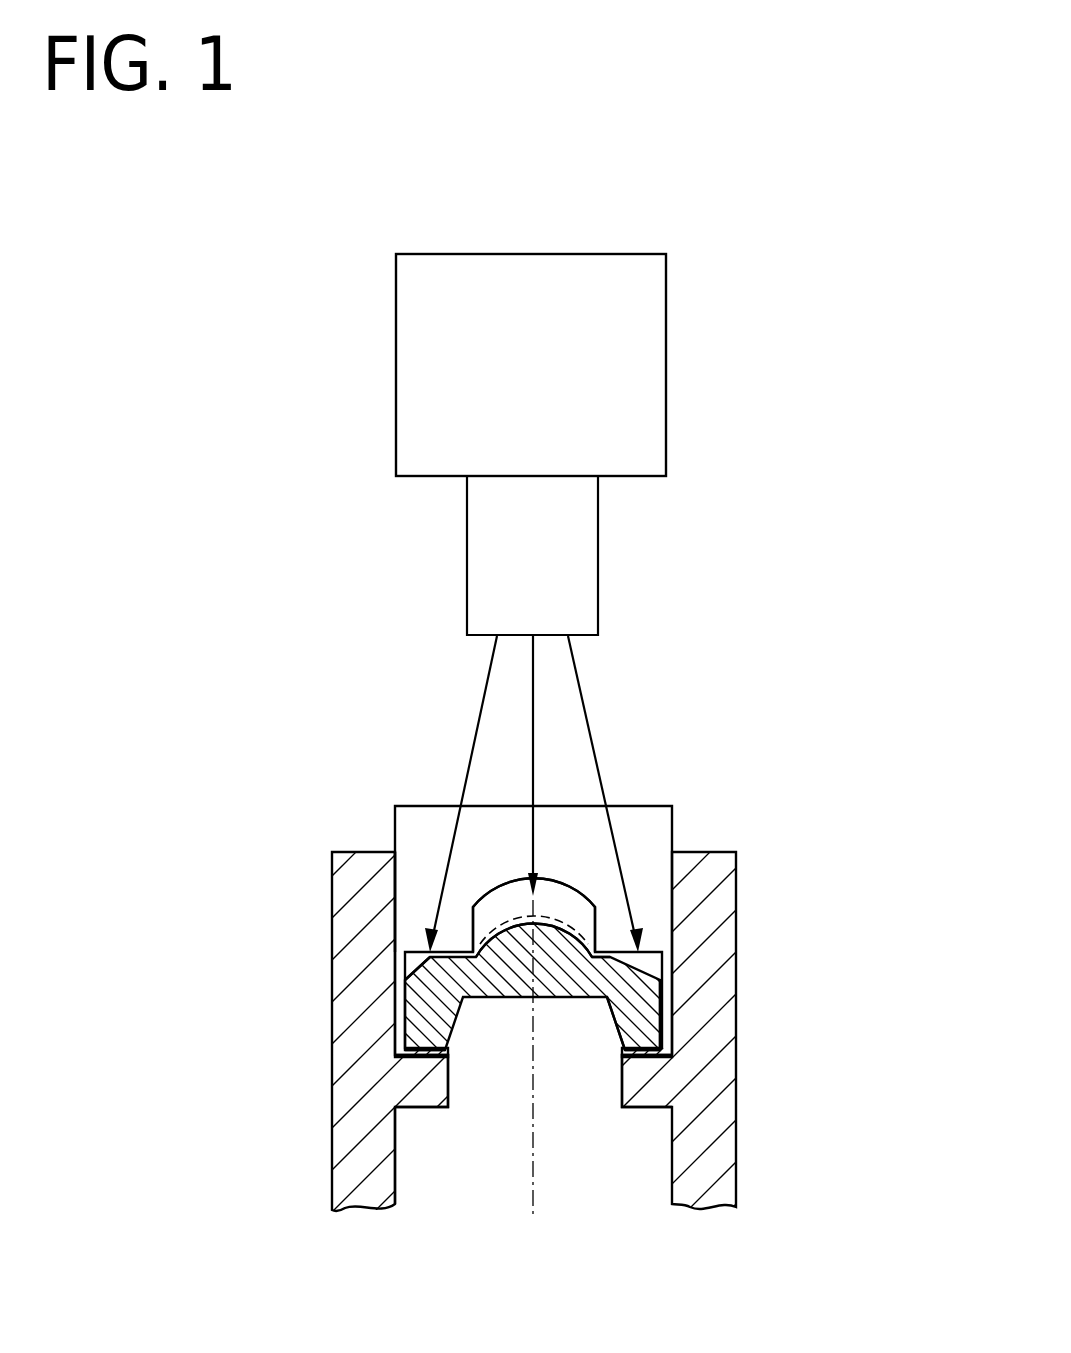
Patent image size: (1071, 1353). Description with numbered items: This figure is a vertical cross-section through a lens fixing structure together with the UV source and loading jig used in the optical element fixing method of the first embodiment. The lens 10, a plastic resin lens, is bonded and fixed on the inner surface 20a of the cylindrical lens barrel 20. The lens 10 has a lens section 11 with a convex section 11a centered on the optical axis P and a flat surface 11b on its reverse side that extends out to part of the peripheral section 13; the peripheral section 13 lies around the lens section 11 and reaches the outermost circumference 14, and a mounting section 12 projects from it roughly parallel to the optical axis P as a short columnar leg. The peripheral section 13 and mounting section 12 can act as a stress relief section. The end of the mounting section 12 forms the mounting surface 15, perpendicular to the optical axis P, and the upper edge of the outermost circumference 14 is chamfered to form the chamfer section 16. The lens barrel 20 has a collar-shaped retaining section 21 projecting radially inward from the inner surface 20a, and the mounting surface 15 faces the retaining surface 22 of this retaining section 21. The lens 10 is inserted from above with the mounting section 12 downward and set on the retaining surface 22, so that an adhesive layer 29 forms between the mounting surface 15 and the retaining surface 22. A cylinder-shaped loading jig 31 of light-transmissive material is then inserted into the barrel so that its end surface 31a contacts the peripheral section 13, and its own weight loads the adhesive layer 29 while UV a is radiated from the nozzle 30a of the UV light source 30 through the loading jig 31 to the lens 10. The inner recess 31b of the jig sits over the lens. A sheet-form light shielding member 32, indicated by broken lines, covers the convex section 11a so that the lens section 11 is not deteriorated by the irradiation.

The UV light source 30 is at (667, 350).
The nozzle 30a is at (600, 552).
The UV a is at (588, 718).
The loading jig 31 is at (658, 823).
The end surface 31a is at (430, 1022).
The holder recess 31b is at (481, 902).
The light shielding member 32 is at (588, 896).
The lens barrel 20 is at (773, 1039).
The inner surface 20a is at (400, 875).
The lens 10 is at (513, 1003).
The lens section 11 is at (553, 948).
The convex section 11a is at (448, 1053).
The flat surface 11b is at (600, 1002).
The mounting section 12 is at (648, 1035).
The peripheral section 13 is at (614, 957).
The outermost circumference 14 is at (662, 985).
The mounting surface 15 is at (648, 1108).
The chamfer section 16 is at (420, 965).
The retaining section 21 is at (397, 1195).
The retaining surface 22 is at (615, 1052).
The adhesive layer 29 is at (410, 1108).
The optical axis P is at (535, 1160).